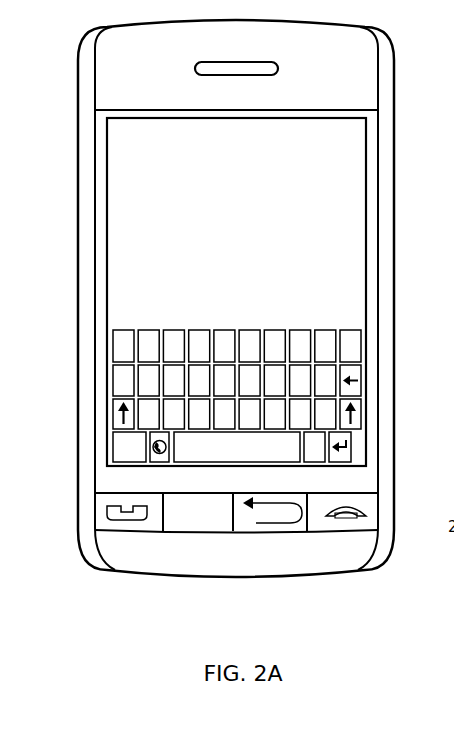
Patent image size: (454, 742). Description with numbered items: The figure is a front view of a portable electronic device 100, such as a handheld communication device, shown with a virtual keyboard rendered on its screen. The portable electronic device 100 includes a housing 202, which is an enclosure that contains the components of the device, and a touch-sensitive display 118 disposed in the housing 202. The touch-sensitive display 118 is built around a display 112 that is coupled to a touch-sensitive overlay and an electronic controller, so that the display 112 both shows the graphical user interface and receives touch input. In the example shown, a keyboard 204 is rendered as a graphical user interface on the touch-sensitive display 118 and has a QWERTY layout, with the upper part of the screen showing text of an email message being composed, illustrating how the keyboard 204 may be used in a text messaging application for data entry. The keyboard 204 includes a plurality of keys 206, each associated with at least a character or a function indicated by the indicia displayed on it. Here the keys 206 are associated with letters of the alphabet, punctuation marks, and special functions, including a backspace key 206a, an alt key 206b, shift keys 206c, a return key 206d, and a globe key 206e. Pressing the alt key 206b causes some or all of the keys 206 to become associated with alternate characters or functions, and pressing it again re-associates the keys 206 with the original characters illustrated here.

The portable electronic device 100 is at (235, 311).
The display 112 is at (119, 191).
The touch-sensitive display 118 is at (367, 268).
The housing 202 is at (387, 187).
The keyboard 204 is at (235, 446).
The keys 206 is at (356, 350).
The backspace key 206a is at (359, 380).
The alt key 206b is at (137, 462).
The shift keys 206c is at (115, 411).
The return key 206d is at (351, 450).
The globe key 206e is at (160, 462).